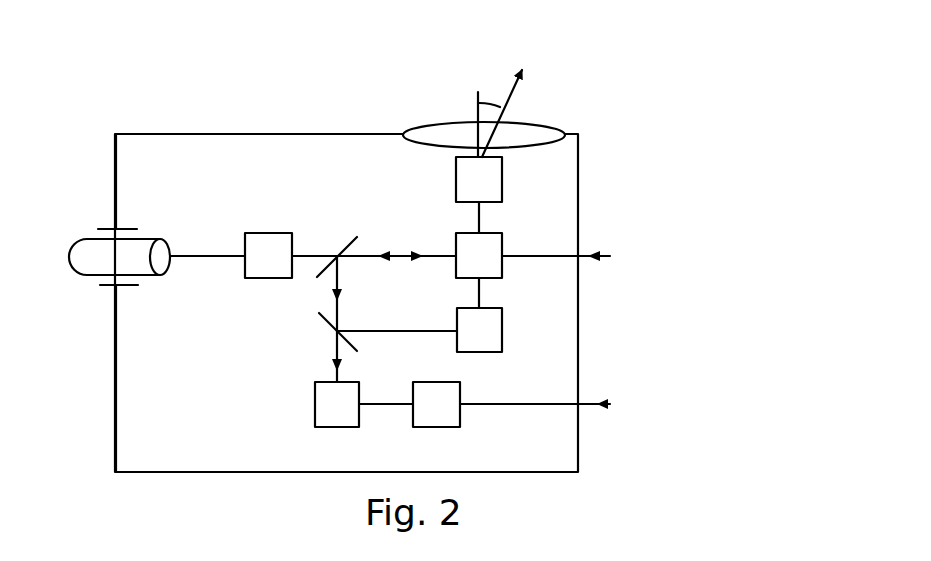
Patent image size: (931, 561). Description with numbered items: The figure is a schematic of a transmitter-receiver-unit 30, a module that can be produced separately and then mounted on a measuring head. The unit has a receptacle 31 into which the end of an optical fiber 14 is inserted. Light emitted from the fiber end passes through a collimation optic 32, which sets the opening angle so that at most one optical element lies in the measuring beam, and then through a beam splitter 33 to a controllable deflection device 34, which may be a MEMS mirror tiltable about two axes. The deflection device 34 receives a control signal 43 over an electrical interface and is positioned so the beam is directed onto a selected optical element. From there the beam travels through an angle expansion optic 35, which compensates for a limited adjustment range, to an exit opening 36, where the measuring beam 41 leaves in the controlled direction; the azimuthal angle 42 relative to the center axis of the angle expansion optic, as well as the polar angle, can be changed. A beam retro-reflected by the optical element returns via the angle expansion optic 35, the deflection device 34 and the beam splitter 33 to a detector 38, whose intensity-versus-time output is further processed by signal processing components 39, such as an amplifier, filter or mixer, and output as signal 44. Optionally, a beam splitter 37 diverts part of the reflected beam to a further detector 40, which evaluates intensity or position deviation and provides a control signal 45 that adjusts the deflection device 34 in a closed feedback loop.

The transmitter-receiver-unit 30 is at (108, 103).
The optical fiber 14 is at (82, 238).
The receptacle 31 is at (100, 285).
The collimation optic 32 is at (244, 233).
The beam splitter 33 is at (355, 237).
The controllable deflection device 34 is at (456, 234).
The angle expansion optic 35 is at (502, 202).
The exit opening 36 is at (428, 124).
The beam splitter 37 is at (320, 317).
The detector 38 is at (316, 426).
The signal processing components 39 is at (415, 427).
The further detector 40 is at (502, 352).
The measuring beam 41 is at (515, 92).
The azimuthal angle 42 is at (492, 101).
The control signal 43 is at (593, 256).
The output signal 44 is at (601, 404).
The control signal 45 is at (479, 294).